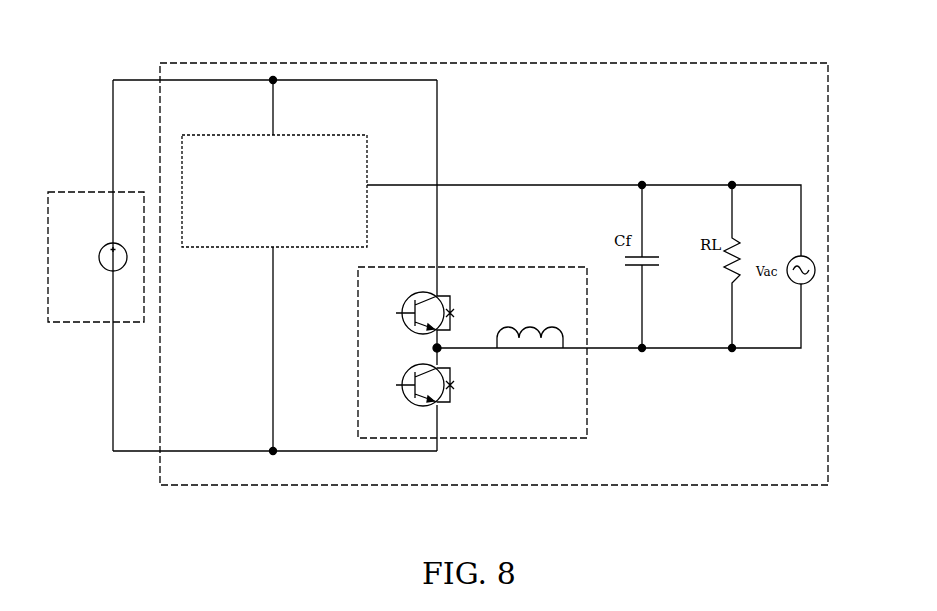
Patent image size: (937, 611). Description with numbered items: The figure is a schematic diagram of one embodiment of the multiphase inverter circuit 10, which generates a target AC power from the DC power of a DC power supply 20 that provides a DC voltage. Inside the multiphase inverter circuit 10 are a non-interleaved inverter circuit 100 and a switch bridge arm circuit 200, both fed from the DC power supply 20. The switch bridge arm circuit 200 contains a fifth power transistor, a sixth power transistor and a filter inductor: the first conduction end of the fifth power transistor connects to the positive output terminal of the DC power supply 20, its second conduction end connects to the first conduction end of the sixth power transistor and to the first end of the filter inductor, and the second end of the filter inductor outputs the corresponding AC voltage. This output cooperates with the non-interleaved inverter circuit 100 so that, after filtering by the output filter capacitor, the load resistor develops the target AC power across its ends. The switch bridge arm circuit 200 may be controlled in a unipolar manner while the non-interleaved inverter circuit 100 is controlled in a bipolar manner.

The multiphase inverter circuit 10 is at (770, 63).
The DC power supply 20 is at (75, 192).
The non-interleaved inverter circuit 100 is at (358, 135).
The switch bridge arm circuit 200 is at (483, 267).